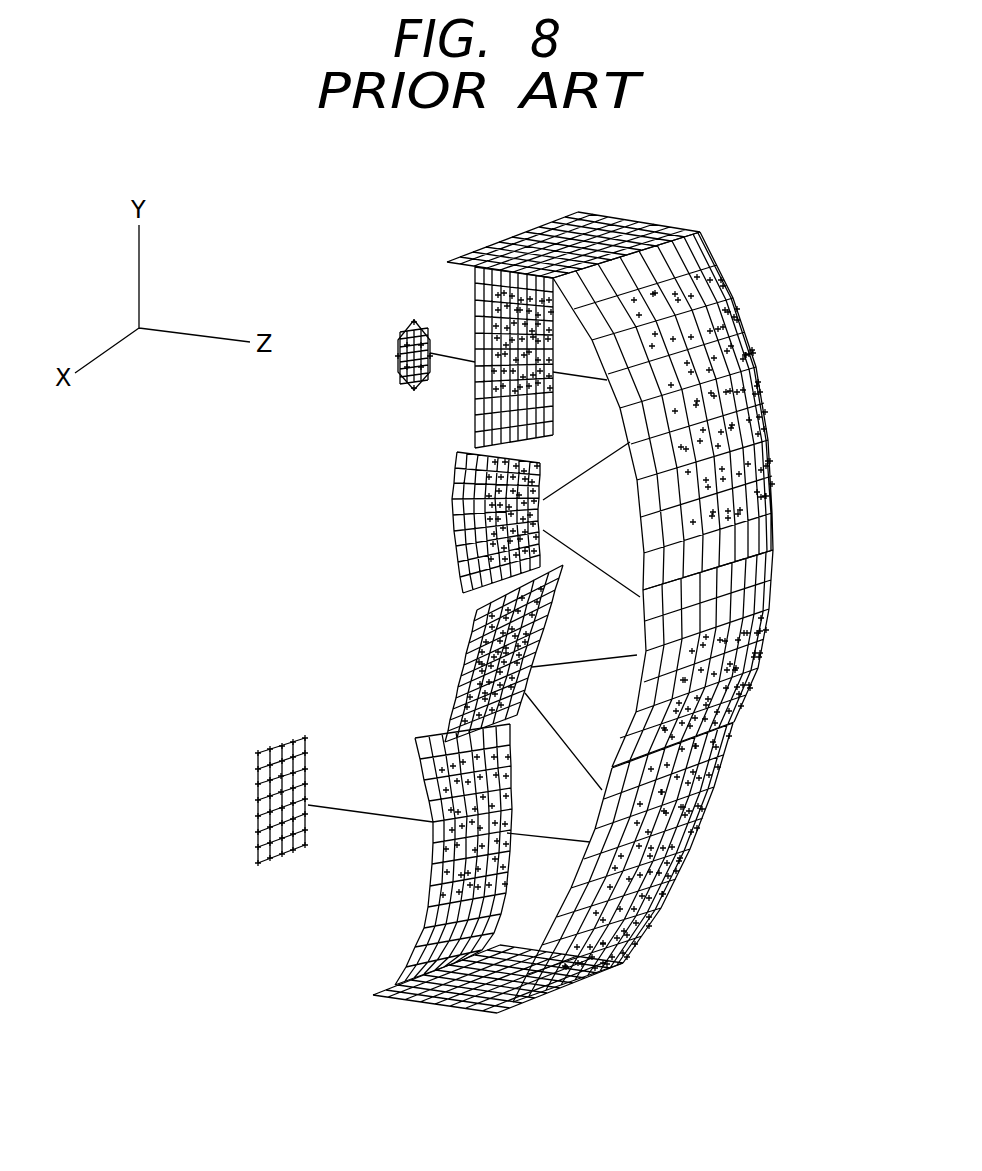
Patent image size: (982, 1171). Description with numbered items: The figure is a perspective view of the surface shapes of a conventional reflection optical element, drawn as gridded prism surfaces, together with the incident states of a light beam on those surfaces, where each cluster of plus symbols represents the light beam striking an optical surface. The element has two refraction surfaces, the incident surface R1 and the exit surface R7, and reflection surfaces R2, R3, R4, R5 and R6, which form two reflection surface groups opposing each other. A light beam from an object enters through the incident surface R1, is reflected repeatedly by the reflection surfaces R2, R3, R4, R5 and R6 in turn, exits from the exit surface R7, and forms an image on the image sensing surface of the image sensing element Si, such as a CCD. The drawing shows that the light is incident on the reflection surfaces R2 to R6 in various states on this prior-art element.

The refraction surface (incident surface) R1 is at (475, 308).
The reflection surface R2 is at (750, 345).
The reflection surface R3 is at (457, 512).
The reflection surface R4 is at (773, 580).
The reflection surface R5 is at (475, 618).
The reflection surface R6 is at (727, 765).
The refraction surface (exit surface) R7 is at (423, 920).
The image sensing element Si is at (257, 827).